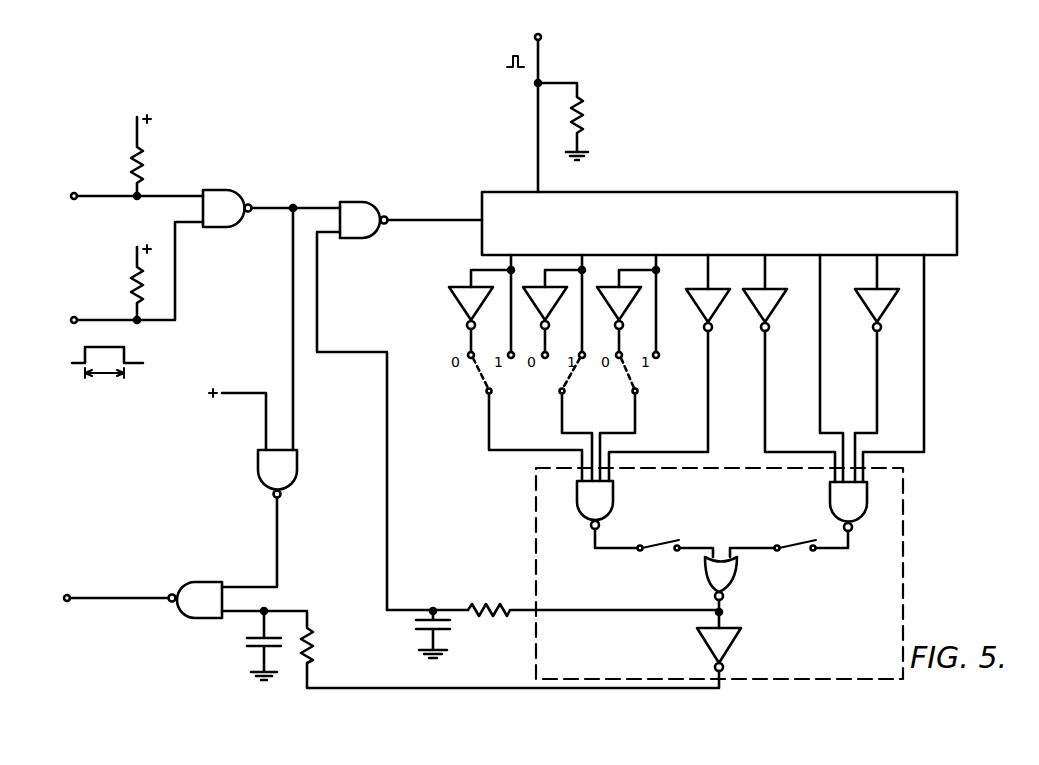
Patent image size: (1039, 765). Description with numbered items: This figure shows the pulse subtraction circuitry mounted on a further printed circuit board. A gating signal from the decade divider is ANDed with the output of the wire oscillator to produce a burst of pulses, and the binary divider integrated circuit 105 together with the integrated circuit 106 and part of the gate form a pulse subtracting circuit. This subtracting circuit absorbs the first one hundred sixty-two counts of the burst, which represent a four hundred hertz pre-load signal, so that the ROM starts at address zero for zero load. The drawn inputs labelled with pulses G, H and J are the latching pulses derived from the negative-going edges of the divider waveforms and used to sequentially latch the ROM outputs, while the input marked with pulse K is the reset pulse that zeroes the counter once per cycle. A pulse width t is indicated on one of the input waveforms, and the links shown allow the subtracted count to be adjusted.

The binary divider integrated circuit 105 is at (890, 208).
The pulse subtracting integrated circuit 106 is at (873, 582).
The latching pulse H is at (122, 161).
The latching pulse G is at (122, 276).
The latching pulse J is at (123, 600).
The counter reset pulse K is at (547, 109).
The pulse width t is at (107, 376).